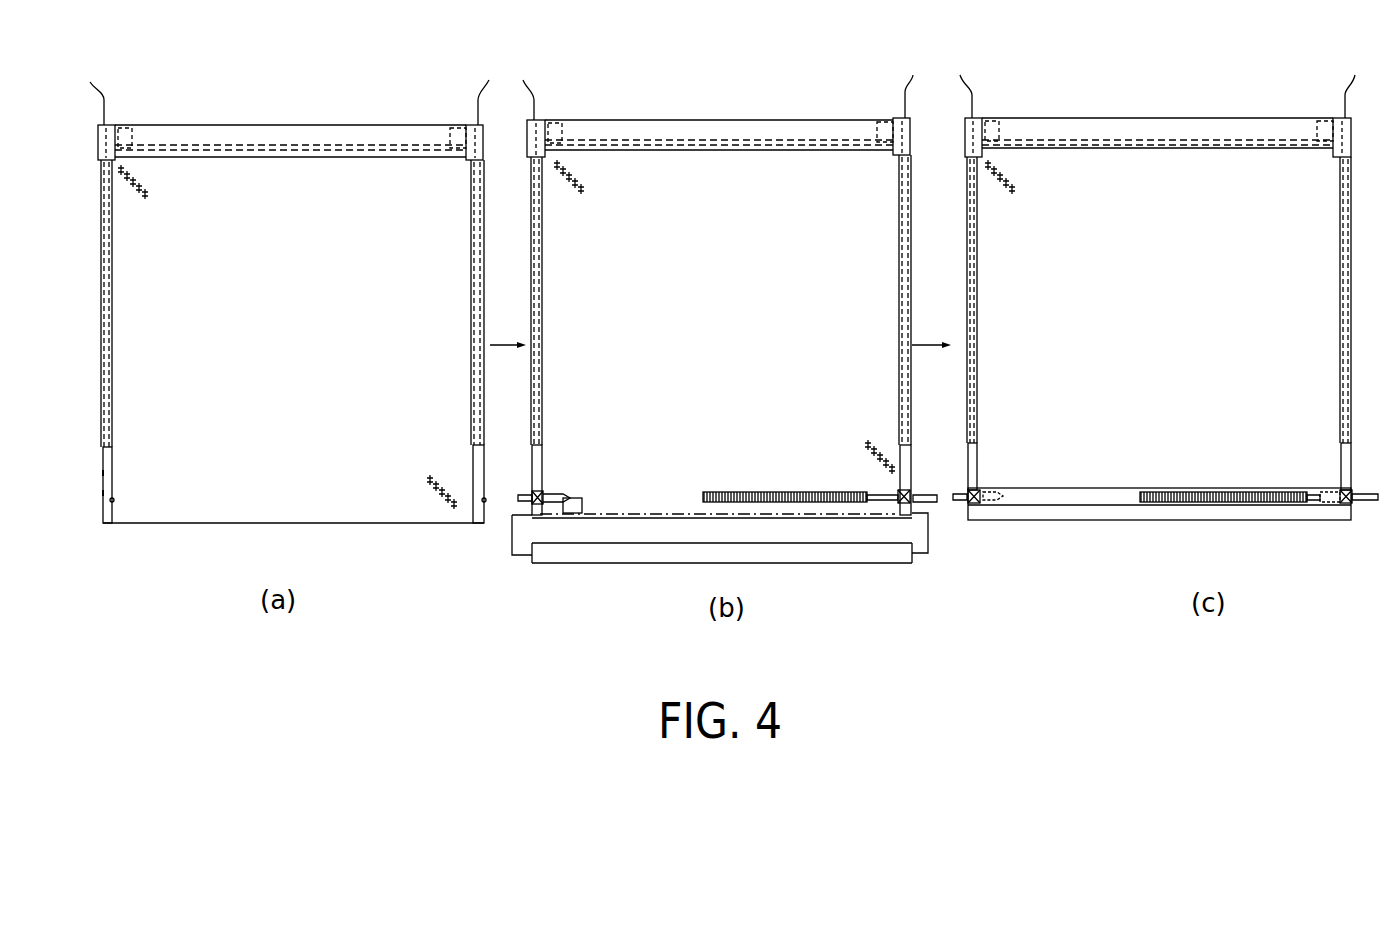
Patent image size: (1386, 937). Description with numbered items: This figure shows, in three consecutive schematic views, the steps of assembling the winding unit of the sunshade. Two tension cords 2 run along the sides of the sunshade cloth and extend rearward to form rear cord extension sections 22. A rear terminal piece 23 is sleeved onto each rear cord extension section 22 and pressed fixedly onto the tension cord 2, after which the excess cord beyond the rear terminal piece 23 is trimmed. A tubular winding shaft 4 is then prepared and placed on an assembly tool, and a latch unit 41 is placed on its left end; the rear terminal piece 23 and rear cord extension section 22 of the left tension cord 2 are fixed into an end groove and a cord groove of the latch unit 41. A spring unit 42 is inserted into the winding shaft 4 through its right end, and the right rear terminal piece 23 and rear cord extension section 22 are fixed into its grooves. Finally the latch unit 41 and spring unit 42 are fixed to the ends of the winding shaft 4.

The tension cord 2 is at (118, 454).
The rear cord extension section 22 is at (108, 482).
The rear terminal piece 23 is at (108, 528).
The winding shaft 4 is at (680, 565).
The latch unit 41 is at (553, 498).
The spring unit 42 is at (787, 503).